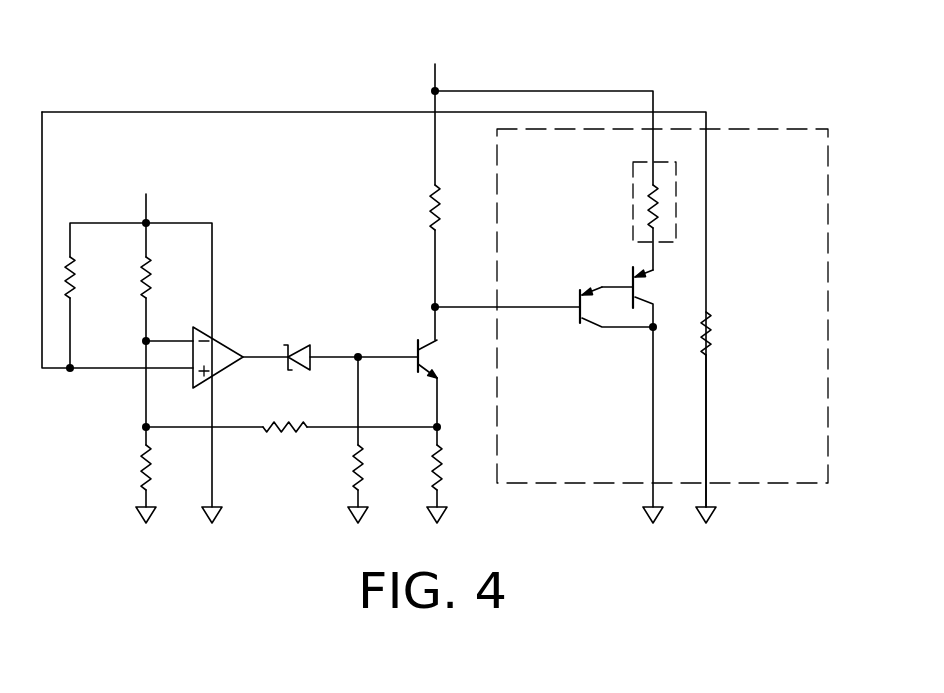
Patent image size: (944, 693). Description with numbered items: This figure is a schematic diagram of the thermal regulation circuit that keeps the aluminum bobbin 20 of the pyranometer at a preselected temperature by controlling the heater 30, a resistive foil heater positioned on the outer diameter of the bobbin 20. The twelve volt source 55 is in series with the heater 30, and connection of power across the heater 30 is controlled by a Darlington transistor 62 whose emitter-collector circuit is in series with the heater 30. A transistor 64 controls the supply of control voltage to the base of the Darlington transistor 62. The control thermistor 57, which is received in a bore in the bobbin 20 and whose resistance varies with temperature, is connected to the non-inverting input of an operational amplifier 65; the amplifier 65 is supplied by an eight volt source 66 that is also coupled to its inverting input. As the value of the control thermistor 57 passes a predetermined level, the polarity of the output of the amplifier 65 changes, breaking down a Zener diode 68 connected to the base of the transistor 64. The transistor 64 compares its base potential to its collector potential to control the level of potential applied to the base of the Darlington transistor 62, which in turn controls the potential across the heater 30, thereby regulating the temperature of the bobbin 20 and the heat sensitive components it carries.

The aluminum bobbin 20 is at (802, 128).
The heater 30 is at (677, 161).
The 12 volt source 55 is at (458, 36).
The control thermistor 57 is at (703, 333).
The Darlington transistor 62 is at (670, 309).
The transistor 64 is at (427, 357).
The operational amplifier 65 is at (228, 346).
The 8 volt source 66 is at (157, 203).
The Zener diode 68 is at (310, 345).